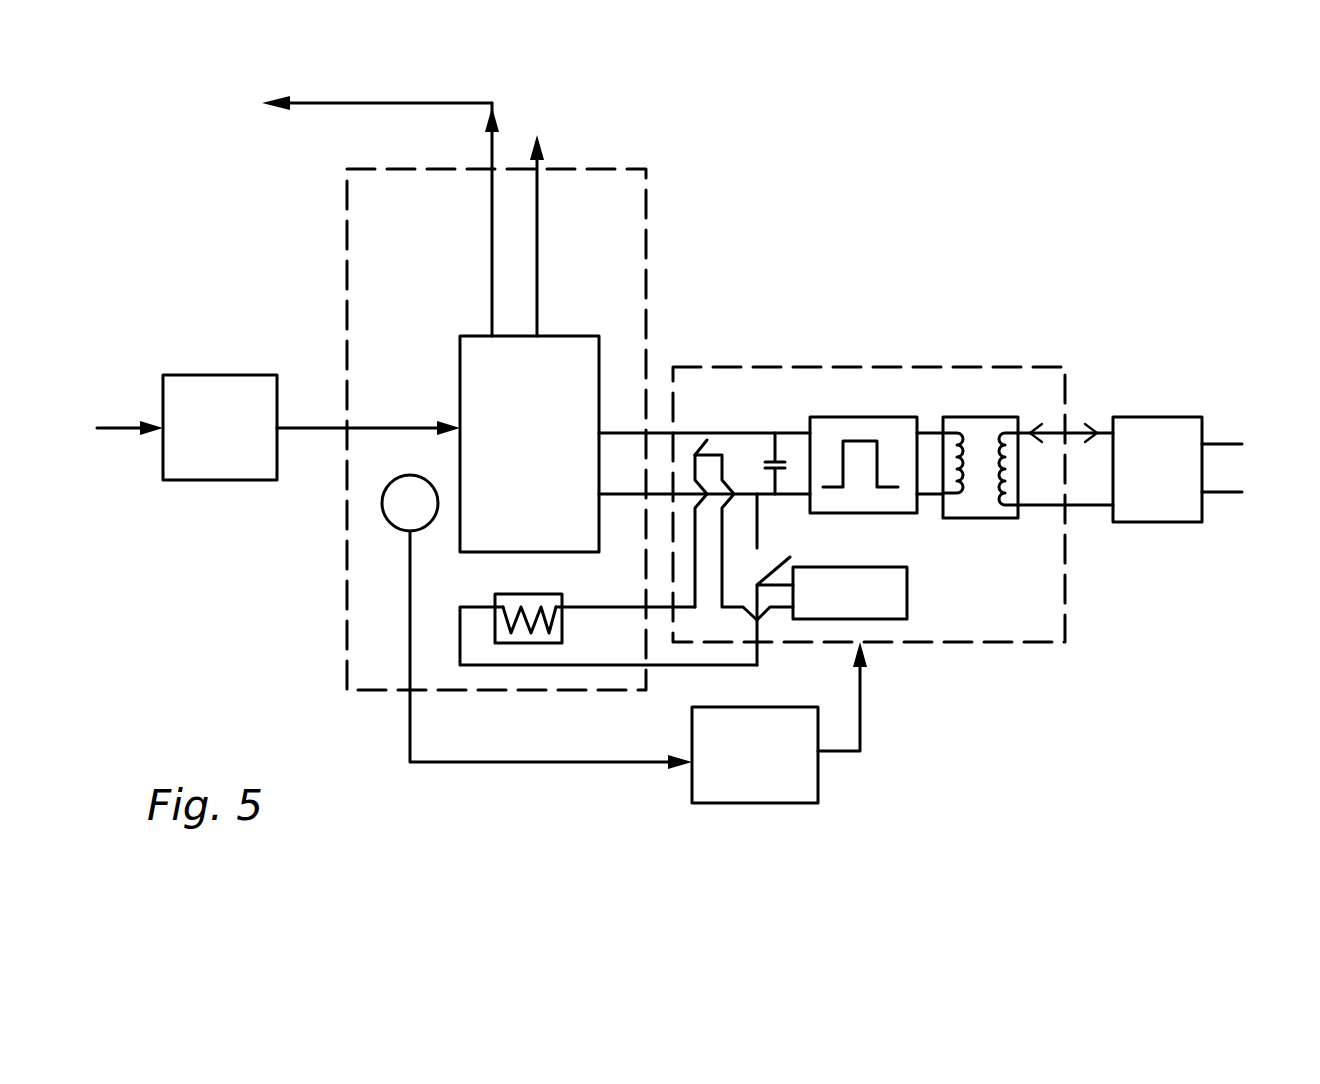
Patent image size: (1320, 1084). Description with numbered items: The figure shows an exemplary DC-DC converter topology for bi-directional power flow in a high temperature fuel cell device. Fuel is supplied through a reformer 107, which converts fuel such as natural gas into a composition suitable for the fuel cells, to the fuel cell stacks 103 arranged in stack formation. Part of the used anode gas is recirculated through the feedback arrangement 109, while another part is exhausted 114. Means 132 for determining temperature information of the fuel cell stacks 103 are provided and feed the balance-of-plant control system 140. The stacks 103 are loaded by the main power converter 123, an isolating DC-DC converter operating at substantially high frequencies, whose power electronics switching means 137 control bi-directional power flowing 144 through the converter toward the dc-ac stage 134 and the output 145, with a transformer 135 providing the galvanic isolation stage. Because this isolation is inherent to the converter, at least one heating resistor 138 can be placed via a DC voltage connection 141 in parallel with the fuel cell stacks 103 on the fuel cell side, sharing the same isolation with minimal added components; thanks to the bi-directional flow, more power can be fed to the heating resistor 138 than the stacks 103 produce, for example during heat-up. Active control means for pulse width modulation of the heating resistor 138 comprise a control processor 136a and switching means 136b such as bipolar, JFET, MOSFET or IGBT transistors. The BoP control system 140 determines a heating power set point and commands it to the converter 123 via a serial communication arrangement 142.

The fuel cell stacks 103 is at (462, 378).
The reformer 107 is at (208, 375).
The feedback arrangement 109 is at (492, 243).
The exhausted gas 114 is at (538, 277).
The main power converter 123 is at (1018, 642).
The means for determining temperature information 132 is at (380, 503).
The dc-ac inverter 134 is at (1170, 522).
The transformer 135 is at (980, 417).
The control processor 136a is at (888, 620).
The switching means 136b is at (703, 433).
The power electronics switching means 137 is at (857, 417).
The heating resistor 138 is at (527, 645).
The balance-of-plant control system 140 is at (730, 803).
The DC voltage connection 141 is at (588, 607).
The serial communication arrangement 142 is at (862, 732).
The bi-directional power flowing 144 is at (1115, 364).
The ac output 145 is at (1253, 468).